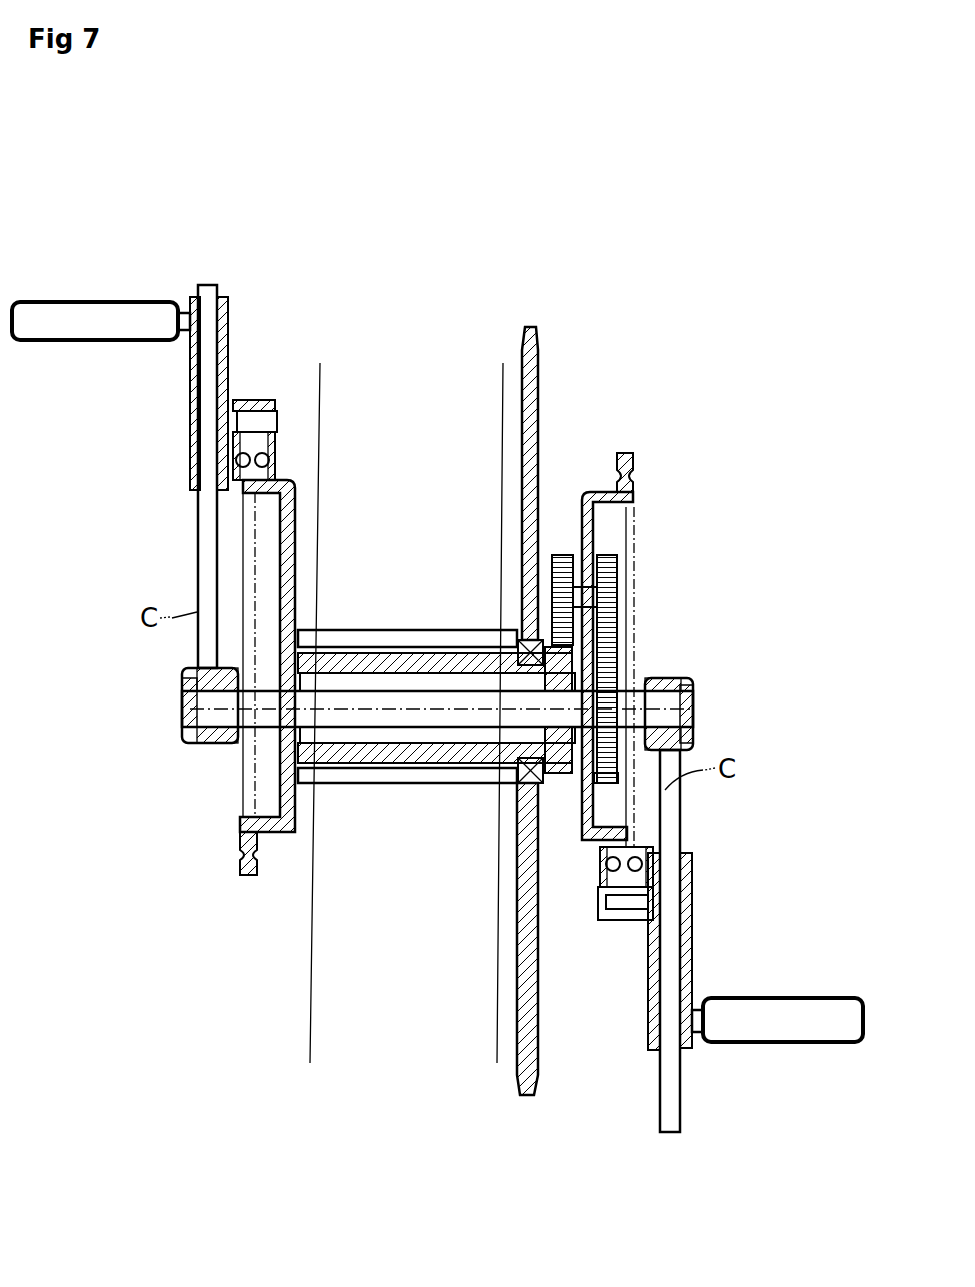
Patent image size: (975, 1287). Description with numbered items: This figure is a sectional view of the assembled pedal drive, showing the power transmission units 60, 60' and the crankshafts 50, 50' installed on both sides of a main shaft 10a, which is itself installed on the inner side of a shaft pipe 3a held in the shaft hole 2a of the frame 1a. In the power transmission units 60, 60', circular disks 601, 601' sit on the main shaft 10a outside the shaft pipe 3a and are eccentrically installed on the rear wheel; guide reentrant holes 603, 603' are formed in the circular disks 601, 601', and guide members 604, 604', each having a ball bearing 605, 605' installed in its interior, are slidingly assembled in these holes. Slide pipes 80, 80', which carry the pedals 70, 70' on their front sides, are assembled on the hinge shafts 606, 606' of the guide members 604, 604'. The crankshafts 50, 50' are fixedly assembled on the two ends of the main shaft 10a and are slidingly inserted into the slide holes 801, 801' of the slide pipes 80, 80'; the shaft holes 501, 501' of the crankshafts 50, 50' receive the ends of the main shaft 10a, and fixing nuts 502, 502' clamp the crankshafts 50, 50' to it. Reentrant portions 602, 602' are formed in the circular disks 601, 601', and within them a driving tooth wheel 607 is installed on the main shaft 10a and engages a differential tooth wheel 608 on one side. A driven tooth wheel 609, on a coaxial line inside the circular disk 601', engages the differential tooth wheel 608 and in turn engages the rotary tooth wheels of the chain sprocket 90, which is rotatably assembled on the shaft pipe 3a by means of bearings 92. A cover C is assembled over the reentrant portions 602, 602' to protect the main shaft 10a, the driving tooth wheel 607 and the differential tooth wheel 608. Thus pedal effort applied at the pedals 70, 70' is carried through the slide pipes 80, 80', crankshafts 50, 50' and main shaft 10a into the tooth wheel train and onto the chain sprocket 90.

The pedal 70 is at (101, 295).
The slide pipe 80 is at (156, 393).
The slide hole 801 is at (168, 393).
The crankshaft 50 is at (172, 476).
The guide member 604 is at (261, 356).
The hinge shaft 606 is at (316, 403).
The ball bearing 605 is at (311, 452).
The circular disk 601 is at (279, 705).
The reentrant portion 602 is at (211, 670).
The guide reentrant hole 603 is at (207, 881).
The power transmission unit 60 is at (222, 960).
The shaft hole 501 is at (174, 705).
The fixing nut 502 is at (146, 724).
The shaft hole 2a is at (405, 645).
The shaft pipe 3a is at (377, 758).
The main shaft 10a is at (413, 712).
The bearing 92 is at (525, 785).
The chain sprocket 90 is at (533, 352).
The frame 1a is at (497, 412).
The driven tooth wheel 609 is at (552, 568).
The differential tooth wheel 608 is at (617, 598).
The driving tooth wheel 607 is at (608, 783).
The circular disk 601' is at (589, 693).
The reentrant portion 602' is at (681, 677).
The guide reentrant hole 603' is at (653, 441).
The power transmission unit 60' is at (711, 458).
The ball bearing 605' is at (695, 867).
The guide member 604' is at (609, 942).
The hinge shaft 606' is at (621, 978).
The shaft hole 501' is at (712, 682).
The fixing nut 502' is at (733, 707).
The crankshaft 50' is at (721, 941).
The slide pipe 80' is at (730, 950).
The slide hole 801' is at (701, 993).
The pedal 70' is at (777, 1051).